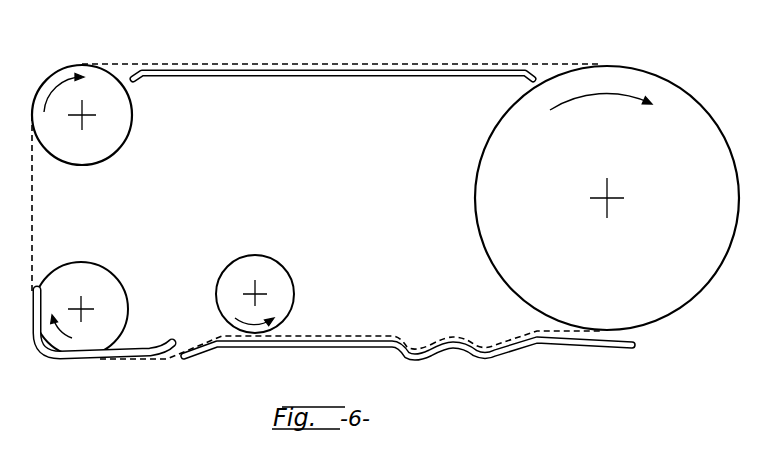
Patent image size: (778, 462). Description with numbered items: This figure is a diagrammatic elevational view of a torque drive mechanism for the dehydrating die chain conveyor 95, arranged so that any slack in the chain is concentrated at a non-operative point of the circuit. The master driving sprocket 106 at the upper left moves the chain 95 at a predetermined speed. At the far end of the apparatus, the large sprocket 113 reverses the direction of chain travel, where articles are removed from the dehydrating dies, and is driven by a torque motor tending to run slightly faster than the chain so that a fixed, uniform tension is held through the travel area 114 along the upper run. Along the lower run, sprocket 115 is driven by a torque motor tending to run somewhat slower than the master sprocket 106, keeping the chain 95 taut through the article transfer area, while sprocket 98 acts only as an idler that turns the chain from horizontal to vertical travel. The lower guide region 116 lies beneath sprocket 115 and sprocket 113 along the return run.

The dehydrating die chain conveyor 95 is at (33, 208).
The idler sprocket 98 is at (112, 278).
The master driving sprocket 106 is at (128, 116).
The sprocket 113 is at (698, 106).
The travel area 114 is at (421, 50).
The sprocket 115 is at (277, 272).
The lower guide bar 116 is at (480, 324).